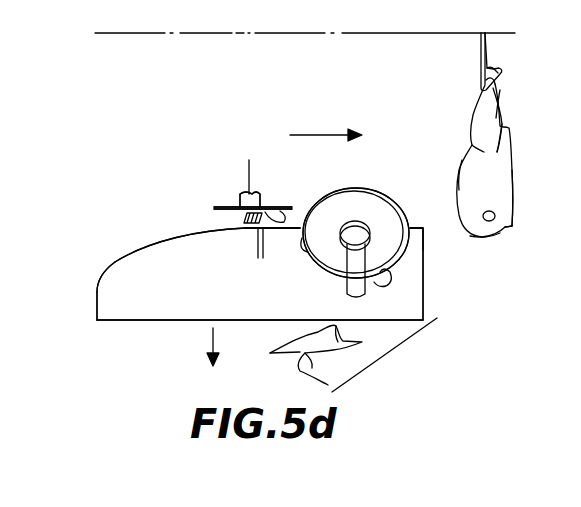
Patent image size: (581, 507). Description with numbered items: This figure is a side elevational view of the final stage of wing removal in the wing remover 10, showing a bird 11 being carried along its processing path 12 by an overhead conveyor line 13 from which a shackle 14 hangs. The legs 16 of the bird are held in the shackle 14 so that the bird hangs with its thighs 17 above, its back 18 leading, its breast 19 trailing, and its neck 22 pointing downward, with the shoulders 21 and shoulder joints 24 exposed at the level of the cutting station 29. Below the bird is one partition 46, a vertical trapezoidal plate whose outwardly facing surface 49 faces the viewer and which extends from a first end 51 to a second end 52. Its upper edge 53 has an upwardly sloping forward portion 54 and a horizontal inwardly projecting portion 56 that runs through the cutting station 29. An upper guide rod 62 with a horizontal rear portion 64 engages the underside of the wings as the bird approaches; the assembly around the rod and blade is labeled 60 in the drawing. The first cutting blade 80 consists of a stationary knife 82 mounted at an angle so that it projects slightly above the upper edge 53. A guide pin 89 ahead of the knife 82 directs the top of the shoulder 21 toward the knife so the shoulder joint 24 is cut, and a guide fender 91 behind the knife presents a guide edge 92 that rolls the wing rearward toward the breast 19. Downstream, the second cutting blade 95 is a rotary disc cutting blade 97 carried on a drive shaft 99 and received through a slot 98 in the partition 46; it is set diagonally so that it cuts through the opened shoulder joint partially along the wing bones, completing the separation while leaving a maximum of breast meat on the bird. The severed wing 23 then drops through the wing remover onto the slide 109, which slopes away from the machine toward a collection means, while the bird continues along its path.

The wing remover 10 is at (176, 140).
The bird 11 is at (448, 116).
The processing path 12 is at (323, 134).
The overhead conveyor line 13 is at (215, 33).
The shackle 14 is at (486, 52).
The leg 16 is at (500, 88).
The thigh 17 is at (500, 118).
The back 18 is at (512, 155).
The breast 19 is at (460, 152).
The shoulder 21 is at (505, 226).
The neck 22 is at (499, 235).
The wing 23 is at (300, 354).
The shoulder joint 24 is at (490, 210).
The cutting station 29 is at (267, 164).
The partition 46 is at (160, 328).
The outwardly facing surface 49 is at (148, 305).
The first end 51 is at (95, 310).
The second end 52 is at (424, 268).
The upper edge 53 is at (96, 276).
The upwardly sloping forward portion 54 is at (122, 262).
The inwardly projecting portion 56 is at (417, 221).
The blade assembly 60 is at (204, 198).
The upper guide rod 62 is at (229, 205).
The rear portion 64 is at (250, 180).
The first cutting blade 80 is at (246, 240).
The knife 82 is at (256, 245).
The guide pin 89 is at (238, 222).
The guide fender 91 is at (277, 230).
The guide edge 92 is at (282, 208).
The second cutting blade 95 is at (421, 204).
The rotary disc cutting blade 97 is at (364, 221).
The slot 98 is at (377, 284).
The drive shaft 99 is at (350, 278).
The slide 109 is at (378, 358).